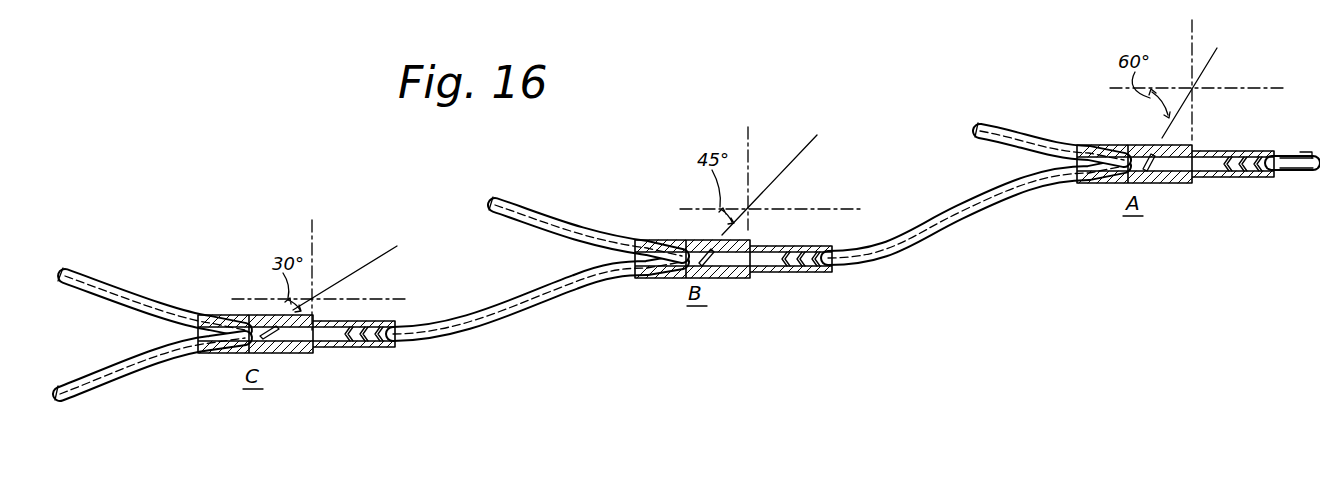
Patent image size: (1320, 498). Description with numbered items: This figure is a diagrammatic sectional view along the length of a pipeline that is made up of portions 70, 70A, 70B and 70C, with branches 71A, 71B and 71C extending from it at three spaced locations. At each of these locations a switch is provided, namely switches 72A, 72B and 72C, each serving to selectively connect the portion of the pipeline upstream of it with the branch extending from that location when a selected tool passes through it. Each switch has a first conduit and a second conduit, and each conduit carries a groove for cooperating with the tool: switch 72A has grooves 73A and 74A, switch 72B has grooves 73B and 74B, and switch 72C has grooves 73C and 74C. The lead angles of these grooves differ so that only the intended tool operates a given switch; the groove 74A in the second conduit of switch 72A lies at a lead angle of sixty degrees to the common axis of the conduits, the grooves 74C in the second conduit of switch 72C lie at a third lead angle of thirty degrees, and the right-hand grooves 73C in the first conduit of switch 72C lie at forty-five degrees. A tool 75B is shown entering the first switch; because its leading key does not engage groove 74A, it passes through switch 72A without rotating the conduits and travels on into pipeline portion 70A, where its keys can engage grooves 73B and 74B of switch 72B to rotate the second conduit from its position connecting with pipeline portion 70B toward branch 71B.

The pipeline portion 70 is at (1300, 172).
The pipeline portion 70A is at (955, 233).
The pipeline portion 70B is at (520, 316).
The pipeline portion 70C is at (103, 384).
The branch 71A is at (1028, 130).
The branch 71B is at (555, 218).
The branch 71C is at (110, 283).
The switch 72A is at (1175, 318).
The switch 72B is at (723, 287).
The switch 72C is at (296, 357).
The groove 73A is at (1243, 185).
The groove 73B is at (801, 286).
The groove 73C is at (388, 304).
The groove 74A is at (1120, 142).
The groove 74B is at (677, 238).
The groove 74C is at (238, 303).
The tool 75B is at (1290, 151).